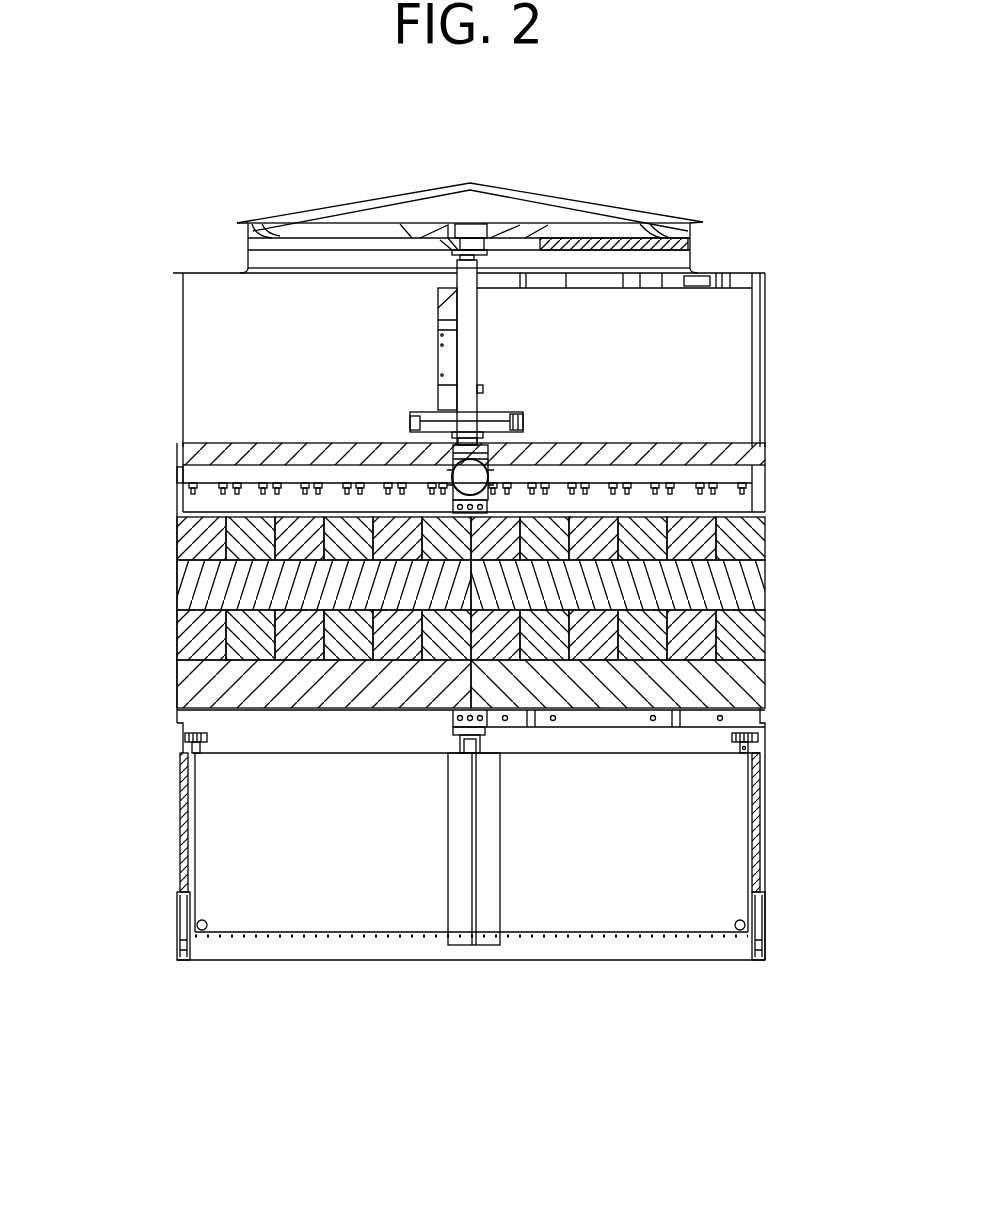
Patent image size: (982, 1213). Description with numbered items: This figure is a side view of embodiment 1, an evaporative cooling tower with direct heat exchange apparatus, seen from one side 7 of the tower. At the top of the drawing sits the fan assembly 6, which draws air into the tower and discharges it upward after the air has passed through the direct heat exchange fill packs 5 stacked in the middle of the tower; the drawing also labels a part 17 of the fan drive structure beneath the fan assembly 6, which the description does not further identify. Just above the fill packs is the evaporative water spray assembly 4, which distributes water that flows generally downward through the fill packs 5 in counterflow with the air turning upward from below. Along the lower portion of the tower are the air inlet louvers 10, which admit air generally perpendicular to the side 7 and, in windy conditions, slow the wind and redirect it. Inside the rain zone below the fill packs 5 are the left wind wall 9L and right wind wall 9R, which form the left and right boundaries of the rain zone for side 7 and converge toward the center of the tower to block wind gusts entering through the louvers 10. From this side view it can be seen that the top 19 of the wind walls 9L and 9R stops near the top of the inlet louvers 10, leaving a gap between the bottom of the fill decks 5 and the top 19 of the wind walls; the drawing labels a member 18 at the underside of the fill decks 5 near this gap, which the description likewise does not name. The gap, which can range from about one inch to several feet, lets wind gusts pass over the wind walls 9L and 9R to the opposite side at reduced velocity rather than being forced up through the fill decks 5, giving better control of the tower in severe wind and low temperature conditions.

The embodiment 1 is at (122, 319).
The evaporative water spray assembly 4 is at (720, 483).
The direct heat exchange fill pack 5 is at (193, 588).
The fan assembly 6 is at (622, 232).
The side 7 is at (290, 962).
The left wind wall 9L is at (357, 863).
The right wind wall 9R is at (642, 868).
The air inlet louvers 10 is at (178, 823).
The motor mount 17 is at (492, 411).
The support beam 18 is at (703, 727).
The top of wind walls 19 is at (657, 757).